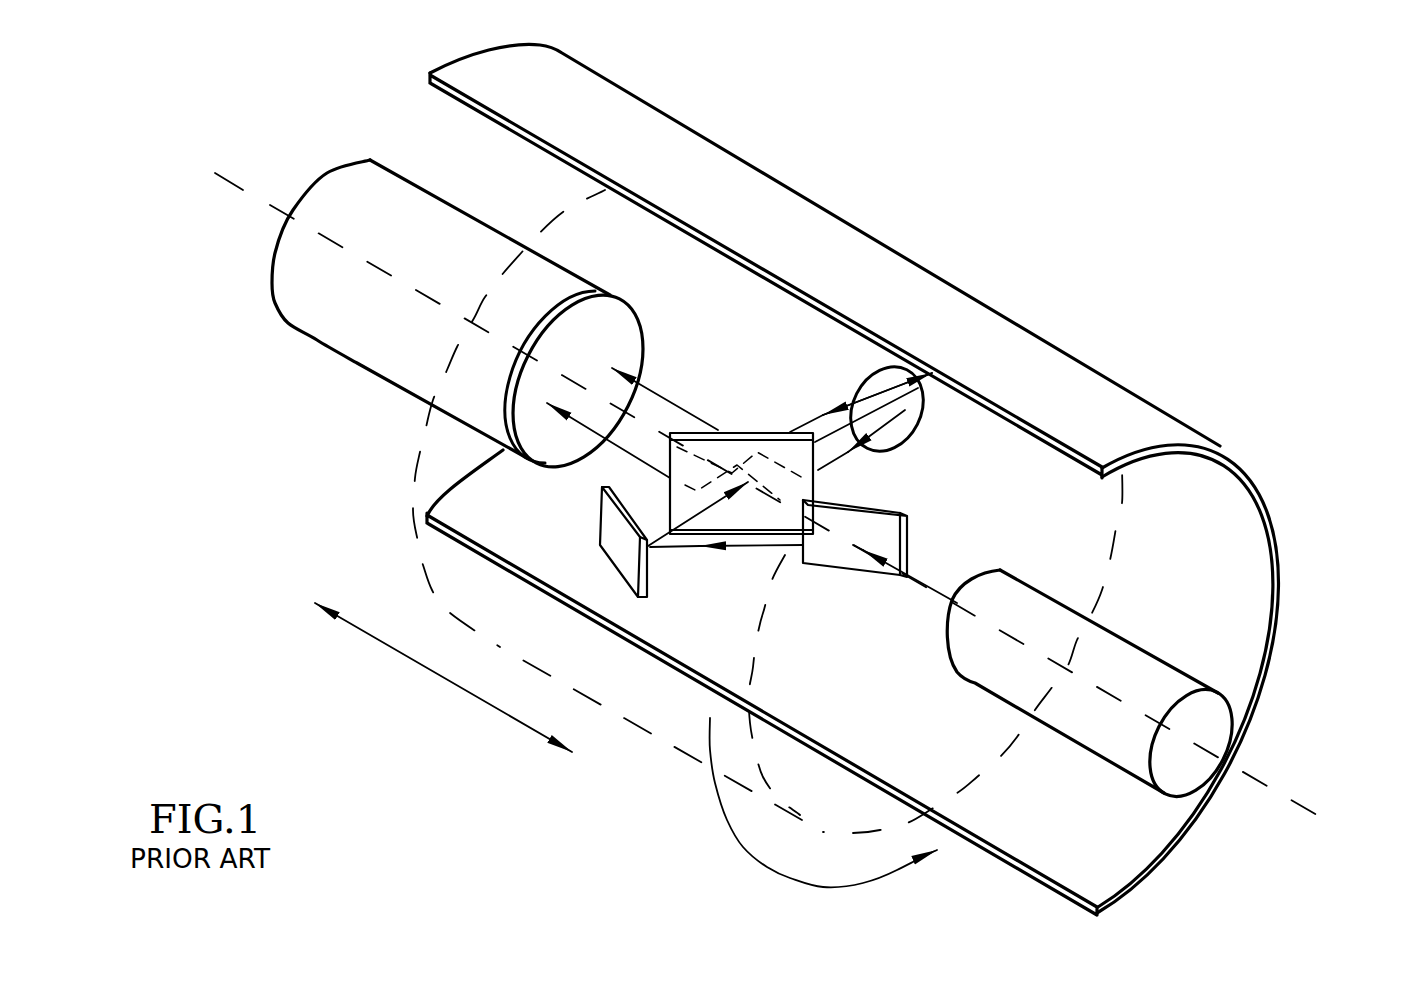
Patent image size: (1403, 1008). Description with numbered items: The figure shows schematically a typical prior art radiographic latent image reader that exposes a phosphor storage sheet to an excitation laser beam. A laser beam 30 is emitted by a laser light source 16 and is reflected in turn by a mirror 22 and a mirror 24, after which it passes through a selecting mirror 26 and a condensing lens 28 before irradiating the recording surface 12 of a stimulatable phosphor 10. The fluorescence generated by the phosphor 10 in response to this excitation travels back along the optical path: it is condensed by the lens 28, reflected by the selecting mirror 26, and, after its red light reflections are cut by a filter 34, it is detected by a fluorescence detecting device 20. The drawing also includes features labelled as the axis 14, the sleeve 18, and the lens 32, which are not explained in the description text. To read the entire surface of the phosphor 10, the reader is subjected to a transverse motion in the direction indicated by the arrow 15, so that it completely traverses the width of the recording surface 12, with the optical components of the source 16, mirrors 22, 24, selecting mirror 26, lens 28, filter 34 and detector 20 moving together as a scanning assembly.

The stimulatable phosphor 10 is at (1200, 827).
The recording surface 12 is at (1113, 867).
The longitudinal axis 14 is at (247, 195).
The arrow 15 is at (385, 645).
The laser light source 16 is at (1150, 665).
The rotating sleeve 18 is at (422, 577).
The fluorescence detecting device 20 is at (433, 212).
The mirror 22 is at (855, 562).
The mirror 24 is at (620, 550).
The selecting mirror 26 is at (753, 430).
The condensing lens 28 is at (878, 382).
The laser beam 30 is at (923, 585).
The lens 32 is at (623, 367).
The filter 34 is at (613, 327).